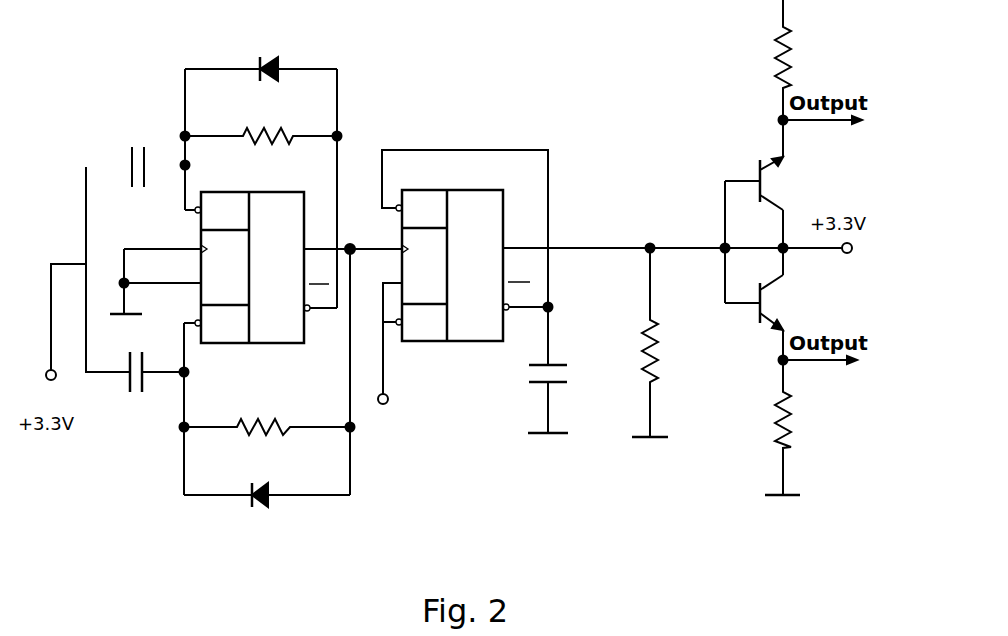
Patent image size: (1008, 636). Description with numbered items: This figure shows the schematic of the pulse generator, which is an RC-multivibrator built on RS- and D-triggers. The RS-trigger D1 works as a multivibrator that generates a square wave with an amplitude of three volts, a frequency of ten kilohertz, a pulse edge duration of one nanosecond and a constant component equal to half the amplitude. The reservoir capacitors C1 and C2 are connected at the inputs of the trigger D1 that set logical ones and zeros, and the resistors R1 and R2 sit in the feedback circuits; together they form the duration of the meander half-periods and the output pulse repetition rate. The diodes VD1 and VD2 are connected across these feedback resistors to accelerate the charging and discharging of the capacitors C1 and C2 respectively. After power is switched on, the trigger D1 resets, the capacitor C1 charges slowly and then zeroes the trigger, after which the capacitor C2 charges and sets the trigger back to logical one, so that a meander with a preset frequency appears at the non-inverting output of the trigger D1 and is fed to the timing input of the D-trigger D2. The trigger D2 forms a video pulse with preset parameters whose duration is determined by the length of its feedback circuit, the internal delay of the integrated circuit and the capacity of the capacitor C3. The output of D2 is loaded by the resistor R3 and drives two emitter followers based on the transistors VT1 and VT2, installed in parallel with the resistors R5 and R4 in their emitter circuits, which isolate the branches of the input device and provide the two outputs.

The reservoir capacitor C1 is at (134, 153).
The reservoir capacitor C2 is at (154, 385).
The capacitor C3 is at (562, 399).
The resistor R1 is at (261, 120).
The resistor R2 is at (267, 413).
The resistor R3 is at (659, 342).
The resistor R4 is at (791, 427).
The resistor R5 is at (798, 60).
The diode VD1 is at (261, 49).
The diode VD2 is at (267, 481).
The RS-trigger D1 is at (230, 255).
The D-trigger D2 is at (465, 282).
The transistor VT1 is at (750, 184).
The transistor VT2 is at (750, 304).